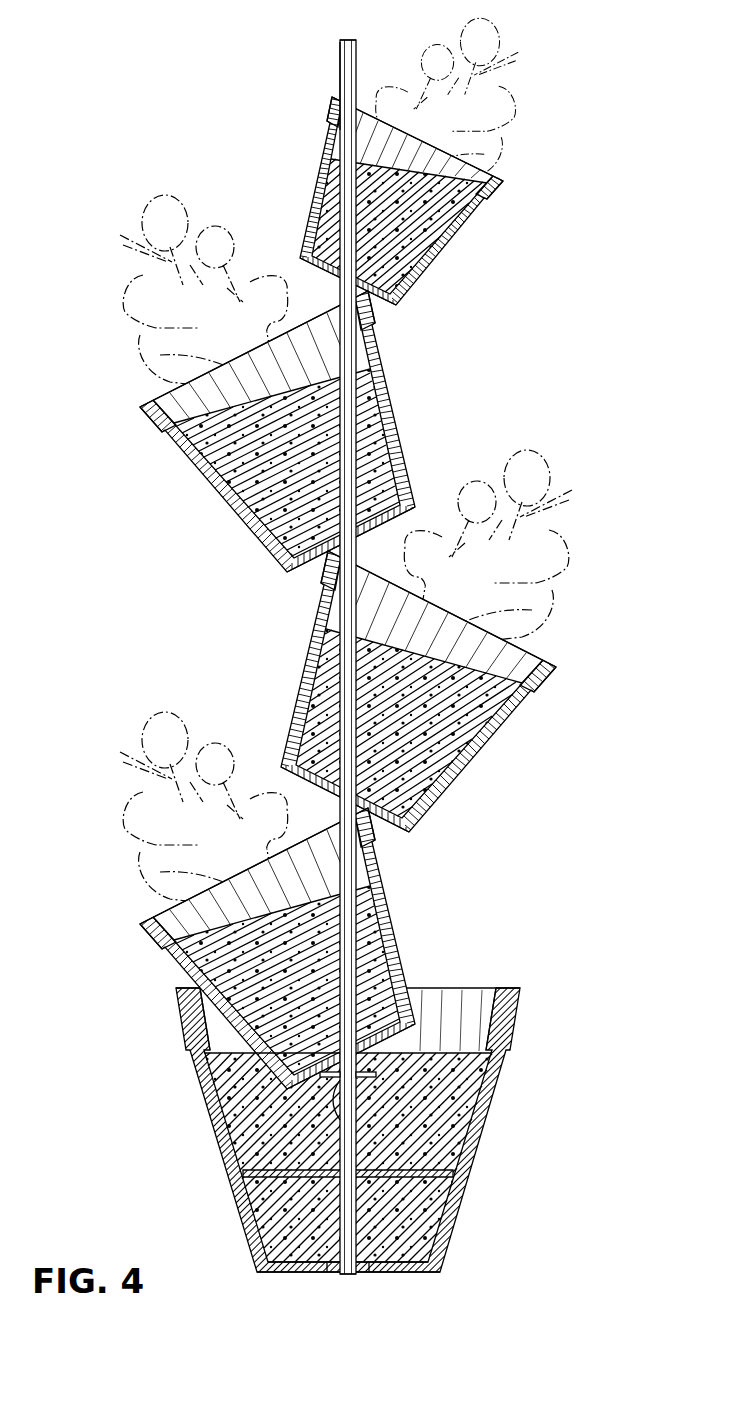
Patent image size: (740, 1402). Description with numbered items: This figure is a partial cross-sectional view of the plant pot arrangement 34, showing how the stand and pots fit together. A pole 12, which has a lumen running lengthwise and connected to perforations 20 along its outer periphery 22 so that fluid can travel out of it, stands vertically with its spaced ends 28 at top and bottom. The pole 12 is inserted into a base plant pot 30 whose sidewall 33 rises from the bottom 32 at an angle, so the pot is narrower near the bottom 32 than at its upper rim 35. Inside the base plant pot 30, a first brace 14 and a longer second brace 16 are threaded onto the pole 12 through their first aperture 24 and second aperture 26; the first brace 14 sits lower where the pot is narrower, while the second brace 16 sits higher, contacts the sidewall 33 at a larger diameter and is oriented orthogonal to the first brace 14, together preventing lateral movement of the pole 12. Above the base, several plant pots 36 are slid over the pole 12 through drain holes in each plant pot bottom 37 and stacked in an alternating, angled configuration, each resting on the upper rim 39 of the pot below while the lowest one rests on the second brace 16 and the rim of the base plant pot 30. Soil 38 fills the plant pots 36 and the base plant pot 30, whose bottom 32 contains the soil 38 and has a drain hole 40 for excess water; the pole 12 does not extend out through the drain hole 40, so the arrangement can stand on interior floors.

The pole 12 is at (359, 53).
The first brace 14 is at (270, 1178).
The second brace 16 is at (357, 1078).
The perforations 20 is at (357, 475).
The outer periphery 22 is at (346, 658).
The first aperture 24 is at (357, 1178).
The second aperture 26 is at (341, 1078).
The ends 28 is at (343, 41).
The base plant pot 30 is at (374, 1131).
The bottom 32 is at (295, 1274).
The sidewall 33 is at (475, 1126).
The plant pot arrangement 34 is at (374, 658).
The upper rim 35 is at (512, 987).
The plant pots 36 is at (320, 128).
The plant pot bottom 37 is at (385, 306).
The soil 38 is at (330, 204).
The upper rim 39 is at (503, 180).
The drain hole 40 is at (342, 1276).